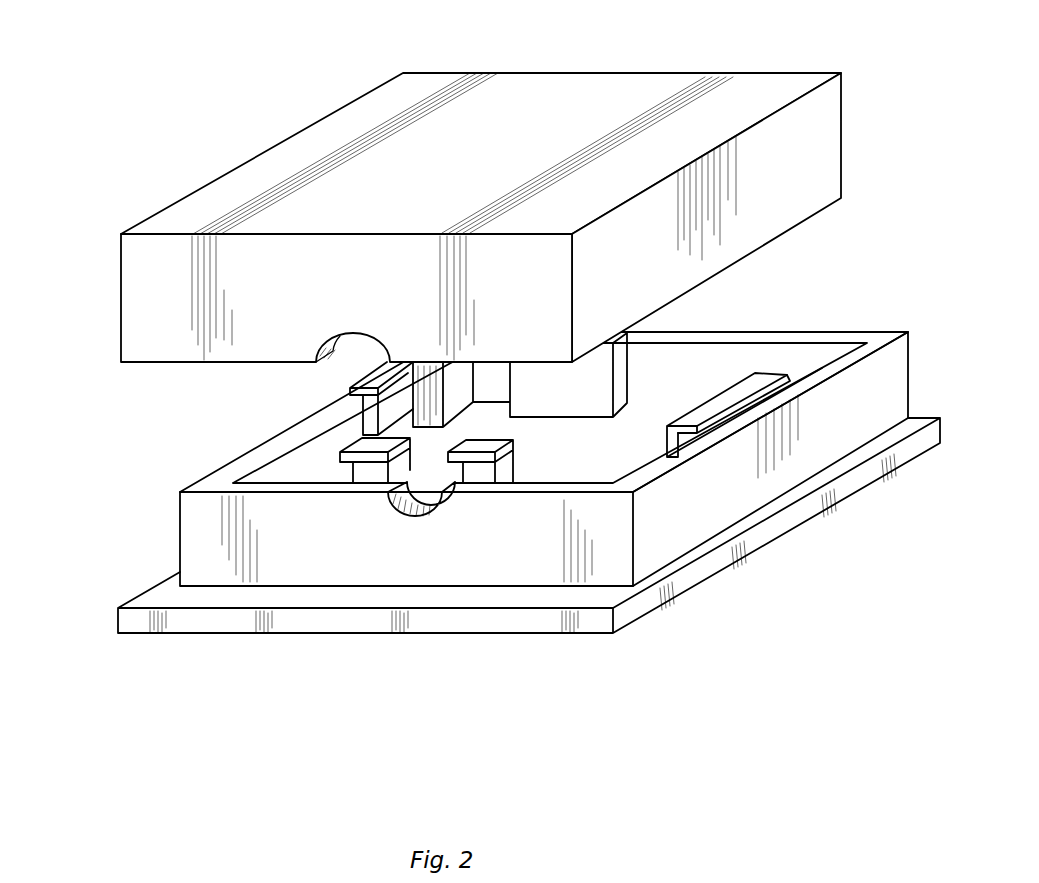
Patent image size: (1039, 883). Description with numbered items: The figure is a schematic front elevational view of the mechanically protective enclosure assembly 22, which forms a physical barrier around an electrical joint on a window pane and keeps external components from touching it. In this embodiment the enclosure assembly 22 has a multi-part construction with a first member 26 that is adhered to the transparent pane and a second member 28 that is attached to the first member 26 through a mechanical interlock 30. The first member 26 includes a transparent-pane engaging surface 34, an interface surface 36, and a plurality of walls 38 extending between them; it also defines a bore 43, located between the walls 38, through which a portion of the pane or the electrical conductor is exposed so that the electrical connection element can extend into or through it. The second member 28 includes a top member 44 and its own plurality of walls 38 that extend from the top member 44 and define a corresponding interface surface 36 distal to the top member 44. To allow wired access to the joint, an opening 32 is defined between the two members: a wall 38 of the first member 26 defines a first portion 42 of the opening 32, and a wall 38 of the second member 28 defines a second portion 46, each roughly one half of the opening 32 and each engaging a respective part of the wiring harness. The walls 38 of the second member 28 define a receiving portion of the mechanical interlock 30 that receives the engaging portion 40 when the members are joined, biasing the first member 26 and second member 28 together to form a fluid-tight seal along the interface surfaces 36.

The enclosure assembly 22 is at (214, 80).
The first member 26 is at (505, 403).
The second member 28 is at (431, 361).
The mechanical interlock 30 is at (765, 369).
The opening 32 is at (312, 347).
The transparent-pane engaging surface 34 is at (693, 584).
The interface surface 36 is at (835, 203).
The walls 38 is at (831, 108).
The engaging portion 40 is at (742, 402).
The first portion of the opening 42 is at (396, 506).
The bore 43 is at (641, 419).
The top member 44 is at (755, 85).
The second portion of the opening 46 is at (338, 362).